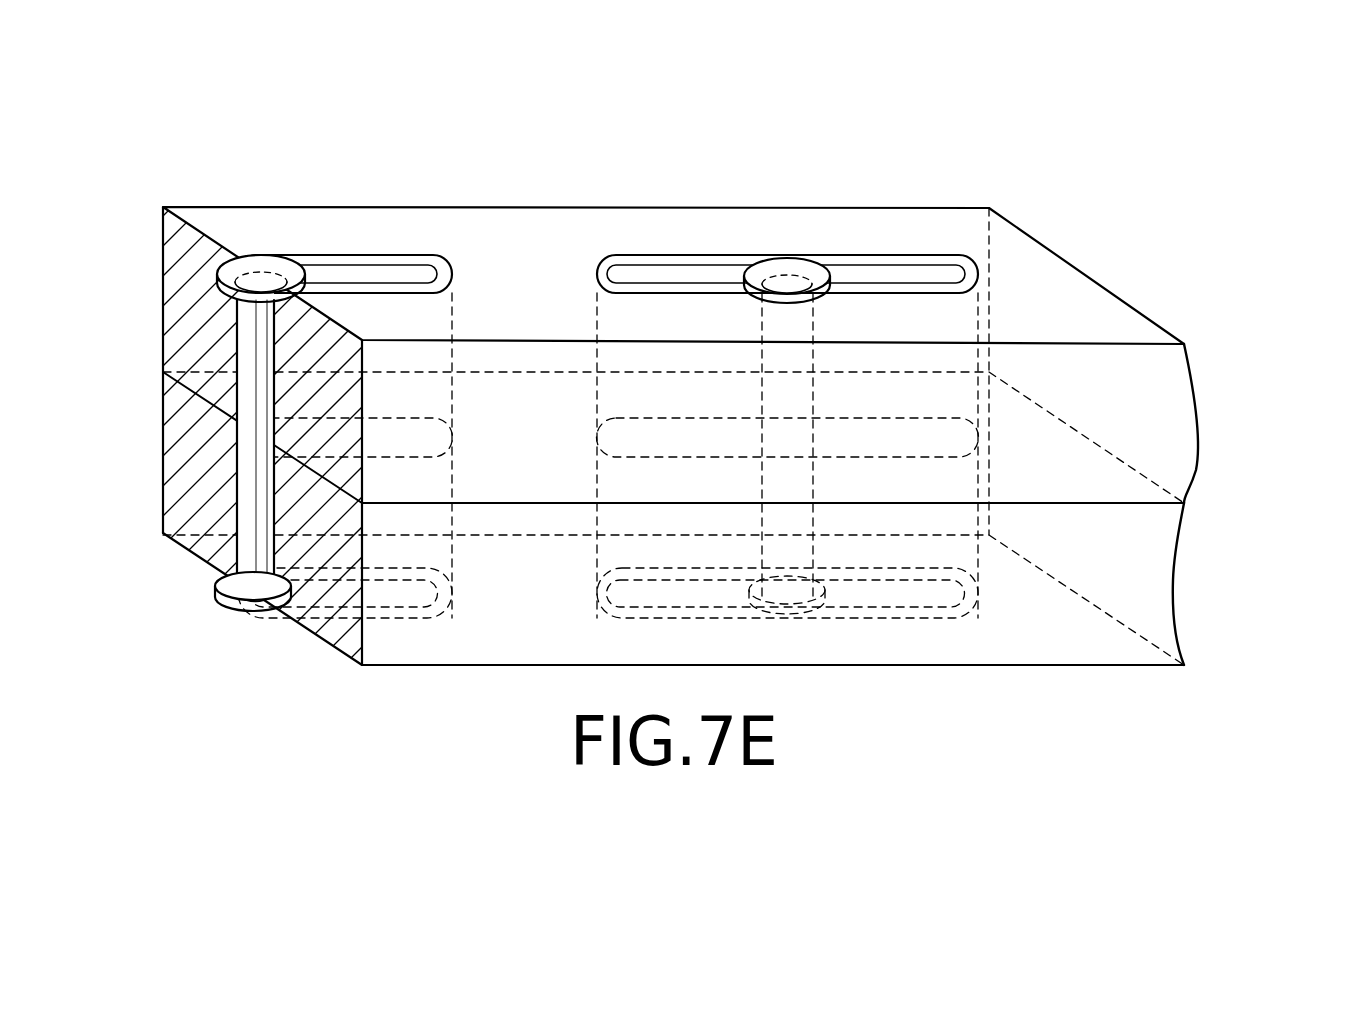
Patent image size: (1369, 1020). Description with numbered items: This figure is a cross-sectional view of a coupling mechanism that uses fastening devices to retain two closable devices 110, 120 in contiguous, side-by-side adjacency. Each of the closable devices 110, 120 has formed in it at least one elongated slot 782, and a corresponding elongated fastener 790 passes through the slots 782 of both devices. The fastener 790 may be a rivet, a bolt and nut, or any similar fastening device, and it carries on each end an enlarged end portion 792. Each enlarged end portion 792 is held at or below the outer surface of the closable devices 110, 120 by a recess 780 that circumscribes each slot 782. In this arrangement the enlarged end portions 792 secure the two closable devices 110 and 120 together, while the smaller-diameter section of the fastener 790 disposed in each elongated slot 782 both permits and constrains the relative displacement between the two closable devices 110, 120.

The closable device 110 is at (1112, 293).
The closable device 120 is at (1176, 574).
The recess 780 is at (407, 267).
The elongated slot 782 is at (350, 252).
The fastener 790 is at (253, 493).
The enlarged end portion 792 is at (255, 262).